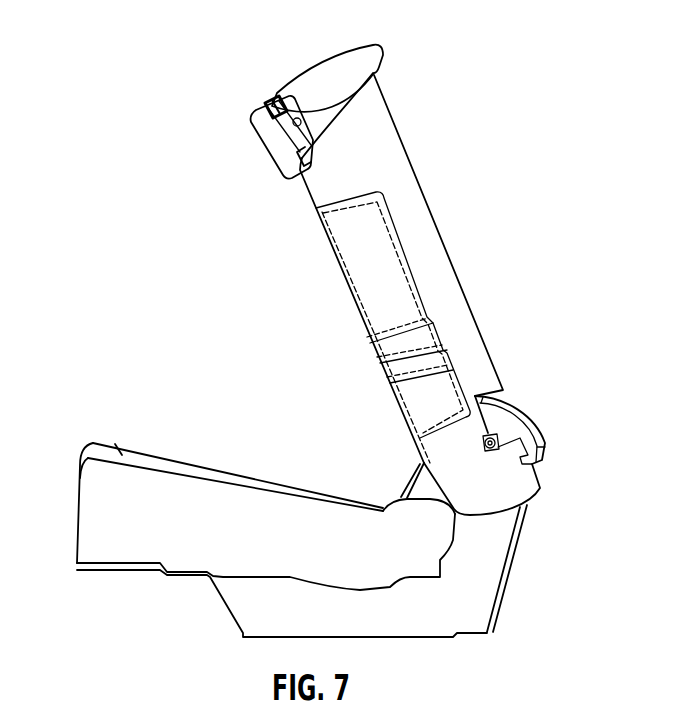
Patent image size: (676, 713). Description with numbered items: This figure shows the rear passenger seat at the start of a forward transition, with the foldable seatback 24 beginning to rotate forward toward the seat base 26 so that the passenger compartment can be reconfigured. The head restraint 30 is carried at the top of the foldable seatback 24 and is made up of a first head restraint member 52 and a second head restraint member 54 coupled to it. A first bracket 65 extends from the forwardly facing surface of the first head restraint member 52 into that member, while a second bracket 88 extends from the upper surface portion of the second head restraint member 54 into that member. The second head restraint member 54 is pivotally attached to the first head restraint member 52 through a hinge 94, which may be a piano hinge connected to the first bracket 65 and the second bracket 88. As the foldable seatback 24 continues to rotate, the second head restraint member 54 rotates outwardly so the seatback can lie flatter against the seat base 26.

The foldable seatback 24 is at (380, 300).
The seat base 26 is at (203, 510).
The head restraint 30 is at (326, 121).
The first head restraint member 52 is at (320, 80).
The second head restraint member 54 is at (285, 152).
The first bracket 65 is at (308, 133).
The second bracket 88 is at (285, 139).
The hinge 94 is at (270, 108).